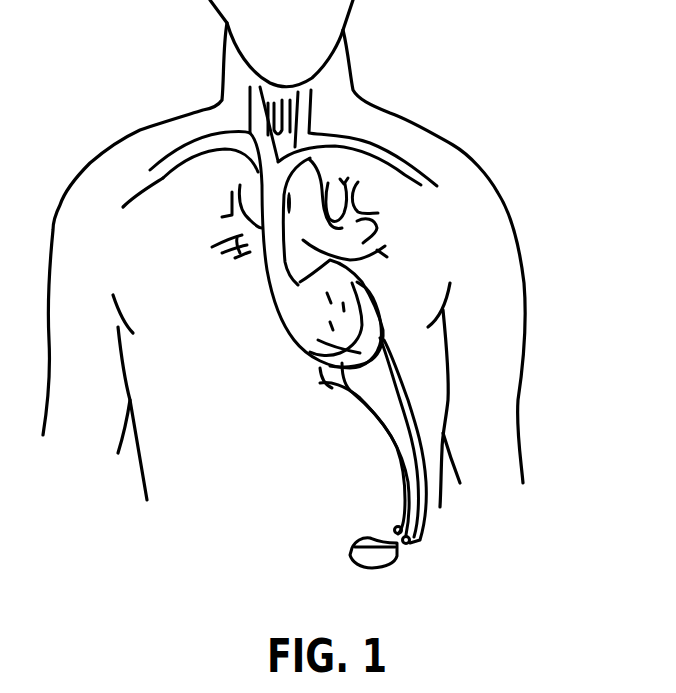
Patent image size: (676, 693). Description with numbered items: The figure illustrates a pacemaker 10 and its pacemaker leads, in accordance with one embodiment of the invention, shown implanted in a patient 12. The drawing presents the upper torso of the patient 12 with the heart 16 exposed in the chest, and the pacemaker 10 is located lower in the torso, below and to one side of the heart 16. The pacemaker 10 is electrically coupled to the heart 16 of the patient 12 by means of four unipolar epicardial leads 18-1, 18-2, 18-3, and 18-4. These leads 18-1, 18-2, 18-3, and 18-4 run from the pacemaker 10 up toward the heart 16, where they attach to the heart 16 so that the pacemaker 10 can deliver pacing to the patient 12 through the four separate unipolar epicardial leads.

The pacemaker 10 is at (353, 548).
The patient 12 is at (453, 145).
The heart 16 is at (375, 300).
The unipolar epicardial lead 18-1 is at (320, 383).
The unipolar epicardial lead 18-2 is at (343, 388).
The unipolar epicardial lead 18-3 is at (400, 397).
The unipolar epicardial lead 18-4 is at (414, 427).